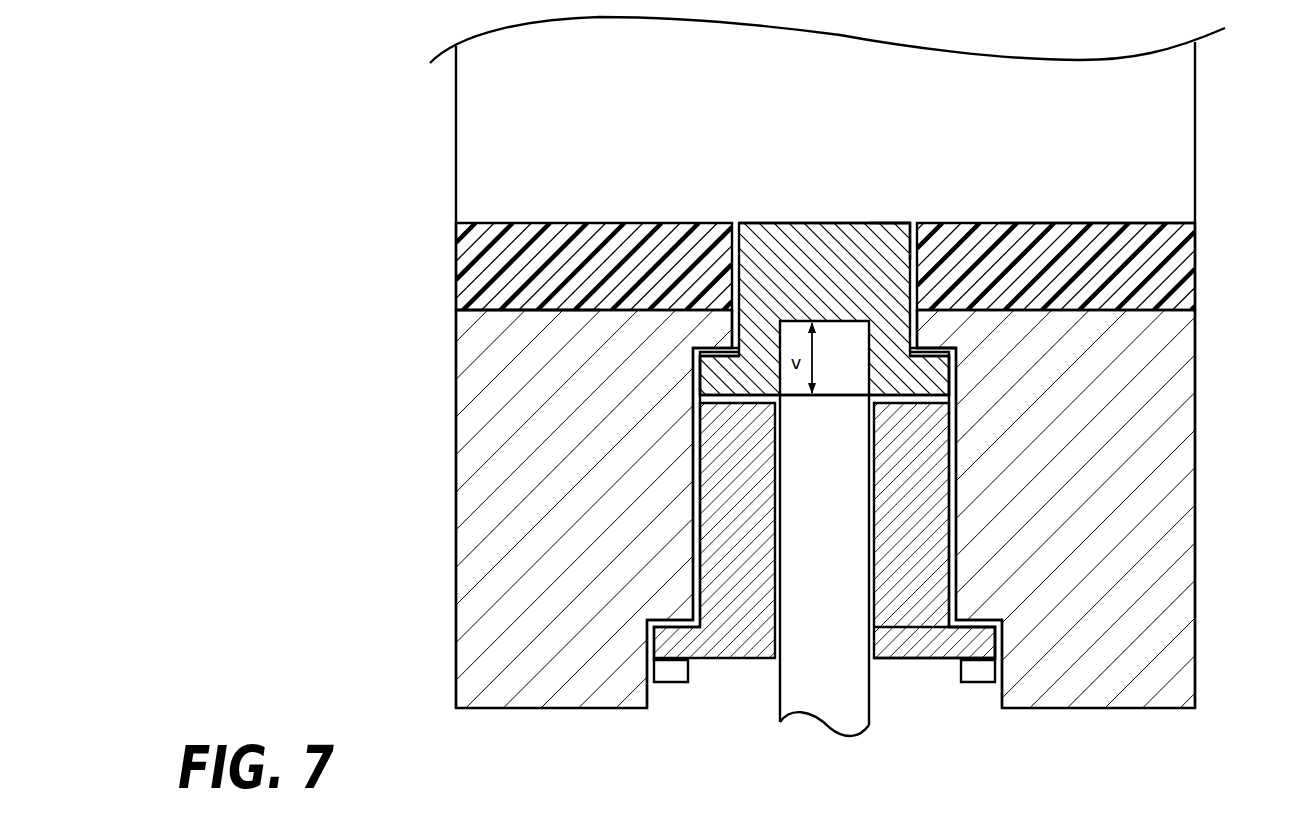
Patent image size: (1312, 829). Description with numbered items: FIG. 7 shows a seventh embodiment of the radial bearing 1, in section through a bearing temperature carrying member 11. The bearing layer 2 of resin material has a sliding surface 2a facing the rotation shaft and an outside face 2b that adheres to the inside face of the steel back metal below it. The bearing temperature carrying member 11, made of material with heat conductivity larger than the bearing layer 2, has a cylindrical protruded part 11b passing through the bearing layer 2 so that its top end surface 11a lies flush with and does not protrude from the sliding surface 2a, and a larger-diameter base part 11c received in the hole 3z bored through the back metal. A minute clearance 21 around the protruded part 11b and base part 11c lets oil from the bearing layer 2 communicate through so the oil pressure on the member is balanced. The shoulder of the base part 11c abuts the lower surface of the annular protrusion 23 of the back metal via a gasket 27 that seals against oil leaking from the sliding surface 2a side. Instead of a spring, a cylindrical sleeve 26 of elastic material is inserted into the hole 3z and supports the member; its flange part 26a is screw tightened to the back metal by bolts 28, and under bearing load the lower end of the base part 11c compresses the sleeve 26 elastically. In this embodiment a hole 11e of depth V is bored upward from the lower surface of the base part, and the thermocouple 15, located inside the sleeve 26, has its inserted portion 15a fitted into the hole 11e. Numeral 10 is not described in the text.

The radial bearing 1 is at (436, 509).
The bearing layer 2 is at (1135, 222).
The sliding surface 2a is at (1077, 222).
The outside face 2b is at (513, 312).
The housing body 10 is at (665, 533).
The bearing temperature carrying member 11 is at (829, 217).
The top end surface 11a is at (812, 222).
The protruded part 11b is at (880, 224).
The base part 11c is at (715, 381).
The hole 11e is at (788, 328).
The thermocouple 15 is at (835, 652).
The inserted portion 15a is at (847, 375).
The minute clearance 21 is at (733, 276).
The annular protrusion 23 is at (940, 327).
The cylindrical sleeve 26 is at (937, 523).
The flange part 26a is at (913, 640).
The gasket 27 is at (933, 338).
The bolts 28 is at (980, 670).
The hole 3z is at (958, 573).